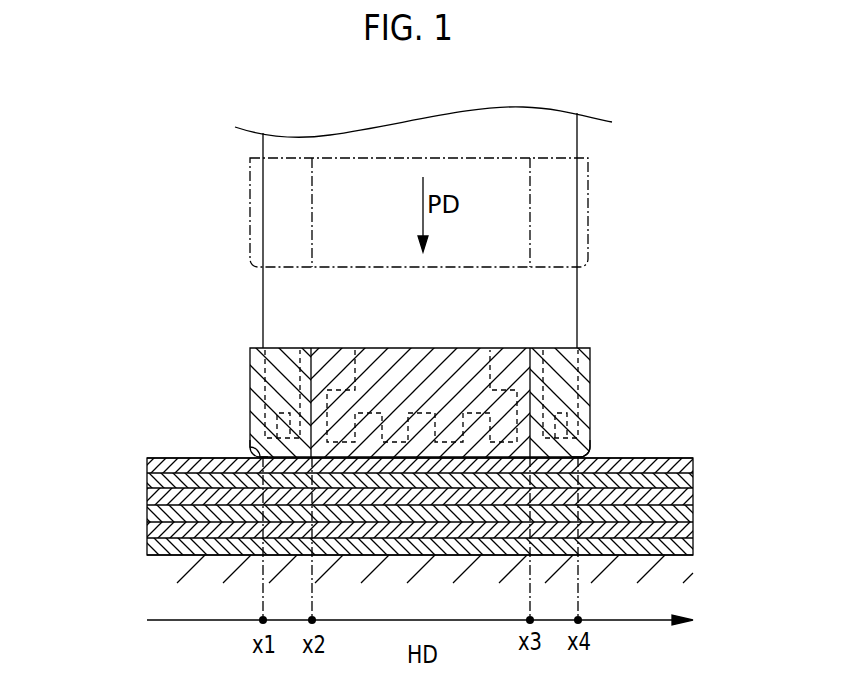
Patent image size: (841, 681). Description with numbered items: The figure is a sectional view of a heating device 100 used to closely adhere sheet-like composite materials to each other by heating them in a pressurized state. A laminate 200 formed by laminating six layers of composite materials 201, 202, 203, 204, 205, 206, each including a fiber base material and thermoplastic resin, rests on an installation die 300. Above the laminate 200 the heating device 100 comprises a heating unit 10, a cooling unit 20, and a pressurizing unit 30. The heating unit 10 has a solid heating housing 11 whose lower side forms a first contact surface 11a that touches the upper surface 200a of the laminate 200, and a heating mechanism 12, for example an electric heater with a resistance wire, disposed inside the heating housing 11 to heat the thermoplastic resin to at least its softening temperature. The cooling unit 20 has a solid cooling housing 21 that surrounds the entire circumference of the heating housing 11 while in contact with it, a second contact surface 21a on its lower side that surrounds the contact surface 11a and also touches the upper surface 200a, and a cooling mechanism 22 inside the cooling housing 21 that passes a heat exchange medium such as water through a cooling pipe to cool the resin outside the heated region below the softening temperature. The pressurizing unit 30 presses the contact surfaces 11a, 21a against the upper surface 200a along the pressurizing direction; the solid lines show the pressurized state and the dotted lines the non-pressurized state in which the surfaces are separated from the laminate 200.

The heating device 100 is at (185, 148).
The heating unit 10 is at (357, 137).
The heating housing 11 is at (465, 362).
The contact surface 11a is at (378, 268).
The heating mechanism 12 is at (507, 387).
The cooling unit 20 is at (248, 206).
The cooling housing 21 is at (288, 363).
The contact surface 21a is at (262, 277).
The cooling mechanism 22 is at (252, 388).
The pressurizing unit 30 is at (567, 292).
The laminate 200 is at (146, 452).
The upper surface 200a is at (677, 455).
The composite material 201 is at (688, 459).
The composite material 202 is at (688, 481).
The composite material 203 is at (688, 497).
The composite material 204 is at (158, 512).
The composite material 205 is at (157, 531).
The composite material 206 is at (158, 548).
The installation die 300 is at (678, 570).